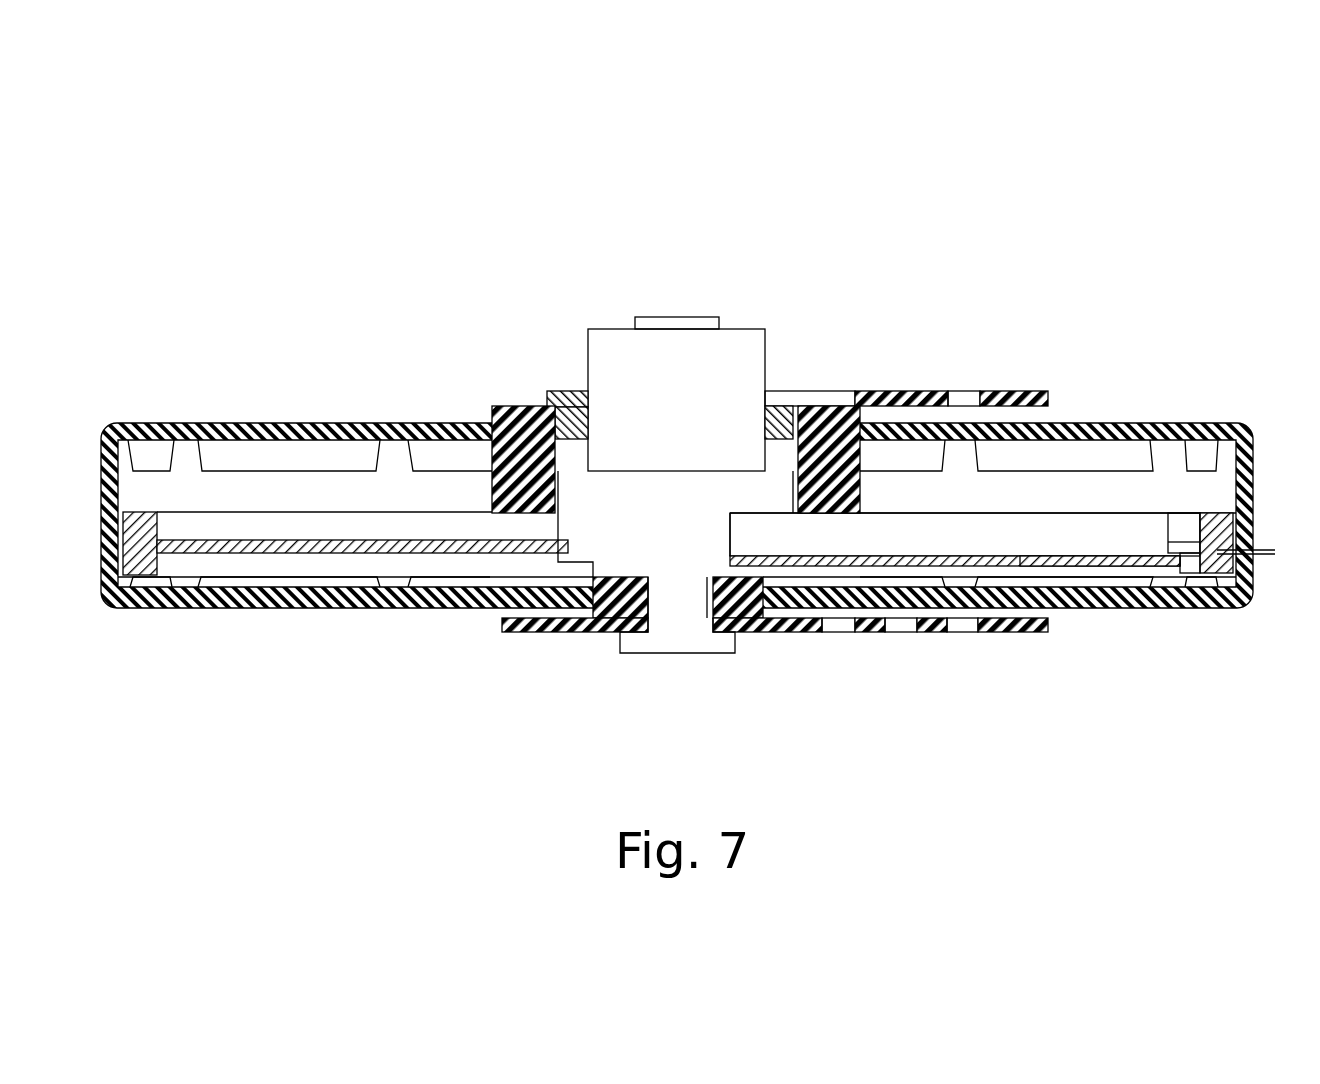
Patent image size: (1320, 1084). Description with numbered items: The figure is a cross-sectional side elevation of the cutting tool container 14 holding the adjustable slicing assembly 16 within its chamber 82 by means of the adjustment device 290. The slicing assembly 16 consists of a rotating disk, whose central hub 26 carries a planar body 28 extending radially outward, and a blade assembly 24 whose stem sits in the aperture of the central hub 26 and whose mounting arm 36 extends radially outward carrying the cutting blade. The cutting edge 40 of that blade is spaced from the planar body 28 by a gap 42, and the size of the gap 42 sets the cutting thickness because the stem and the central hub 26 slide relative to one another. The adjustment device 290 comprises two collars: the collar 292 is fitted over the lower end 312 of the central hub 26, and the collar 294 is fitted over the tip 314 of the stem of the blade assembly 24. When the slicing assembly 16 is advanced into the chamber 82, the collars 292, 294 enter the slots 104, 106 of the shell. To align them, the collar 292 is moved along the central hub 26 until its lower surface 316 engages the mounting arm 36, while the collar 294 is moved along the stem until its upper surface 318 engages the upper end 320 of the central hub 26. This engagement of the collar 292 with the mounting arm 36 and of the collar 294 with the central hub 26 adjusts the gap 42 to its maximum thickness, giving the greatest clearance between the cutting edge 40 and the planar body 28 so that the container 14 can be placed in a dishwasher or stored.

The cutting tool container 14 is at (1099, 193).
The adjustable slicing assembly 16 is at (619, 287).
The blade assembly 24 is at (450, 555).
The central hub 26 is at (748, 352).
The planar body 28 is at (1190, 545).
The mounting arm 36 is at (923, 513).
The cutting edge 40 is at (1135, 562).
The gap 42 is at (1270, 548).
The chamber 82 is at (1202, 452).
The slot 104 is at (518, 402).
The slot 106 is at (537, 634).
The adjustment device 290 is at (393, 365).
The collar 292 is at (488, 470).
The collar 294 is at (738, 634).
The lower end 312 is at (722, 415).
The tip 314 is at (668, 645).
The lower surface 316 is at (838, 513).
The upper surface 318 is at (740, 590).
The upper end 320 is at (692, 585).